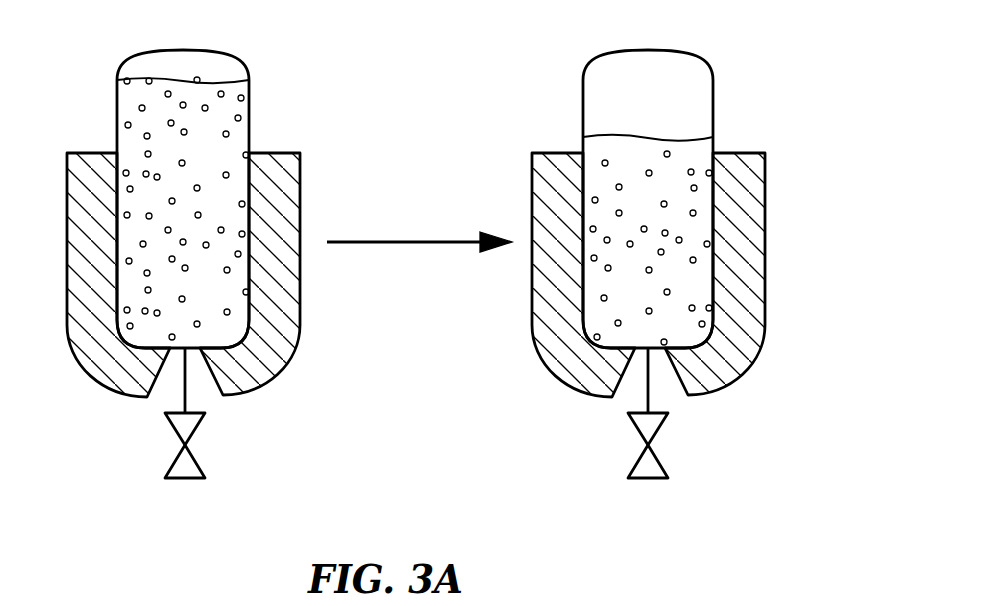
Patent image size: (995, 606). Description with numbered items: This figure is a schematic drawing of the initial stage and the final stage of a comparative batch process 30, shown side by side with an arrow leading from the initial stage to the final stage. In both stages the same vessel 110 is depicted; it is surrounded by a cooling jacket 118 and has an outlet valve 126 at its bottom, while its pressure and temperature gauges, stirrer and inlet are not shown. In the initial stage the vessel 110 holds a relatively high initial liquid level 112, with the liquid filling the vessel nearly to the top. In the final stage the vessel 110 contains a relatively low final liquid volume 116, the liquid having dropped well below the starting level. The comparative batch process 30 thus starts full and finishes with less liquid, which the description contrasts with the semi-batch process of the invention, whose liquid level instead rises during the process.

The comparative batch process 30 is at (419, 172).
The vessel 110 is at (304, 121).
The initial liquid level 112 is at (199, 80).
The final liquid volume 116 is at (683, 137).
The cooling jacket 118 is at (291, 196).
The outlet valve 126 is at (187, 446).